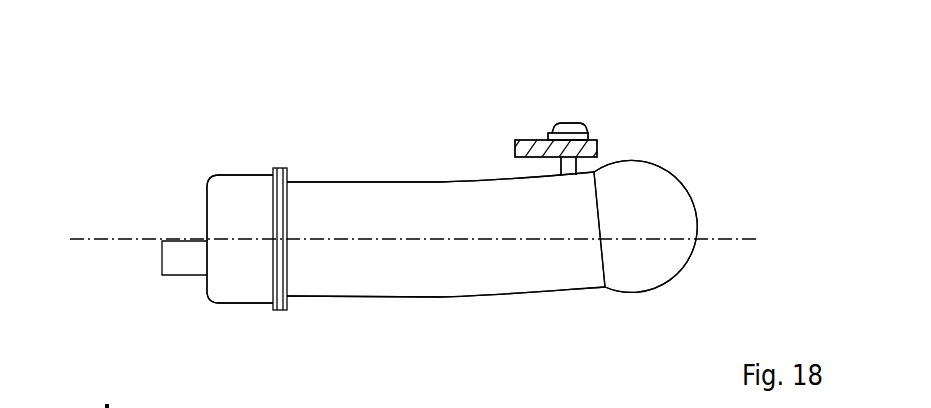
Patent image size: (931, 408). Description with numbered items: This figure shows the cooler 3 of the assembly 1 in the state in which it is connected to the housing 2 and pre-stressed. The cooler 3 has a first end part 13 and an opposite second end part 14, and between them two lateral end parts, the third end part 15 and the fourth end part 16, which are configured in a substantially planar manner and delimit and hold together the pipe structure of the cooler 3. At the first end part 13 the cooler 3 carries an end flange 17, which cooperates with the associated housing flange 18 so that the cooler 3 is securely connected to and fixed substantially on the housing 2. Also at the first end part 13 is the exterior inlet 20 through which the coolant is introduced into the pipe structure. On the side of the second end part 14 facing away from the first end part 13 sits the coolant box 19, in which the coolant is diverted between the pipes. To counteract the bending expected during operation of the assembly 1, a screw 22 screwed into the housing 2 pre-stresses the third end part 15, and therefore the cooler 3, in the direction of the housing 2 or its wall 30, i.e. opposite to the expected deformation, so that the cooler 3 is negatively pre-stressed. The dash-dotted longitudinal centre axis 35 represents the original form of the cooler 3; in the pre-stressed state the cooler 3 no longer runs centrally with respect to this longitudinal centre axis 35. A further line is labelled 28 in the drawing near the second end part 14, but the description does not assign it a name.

The assembly 1 is at (205, 107).
The housing 2 is at (525, 140).
The cooler 3 is at (190, 177).
The first end part 13 is at (207, 212).
The second end part 14 is at (693, 199).
The third end part 15 is at (440, 182).
The fourth end part 16 is at (440, 298).
The end flange 17 is at (277, 168).
The housing flange 18 is at (284, 168).
The coolant box 19 is at (665, 262).
The inlet 20 is at (168, 263).
The screw 22 is at (573, 124).
The shoulder 28 is at (595, 208).
The wall 30 is at (588, 147).
The longitudinal centre axis 35 is at (83, 238).